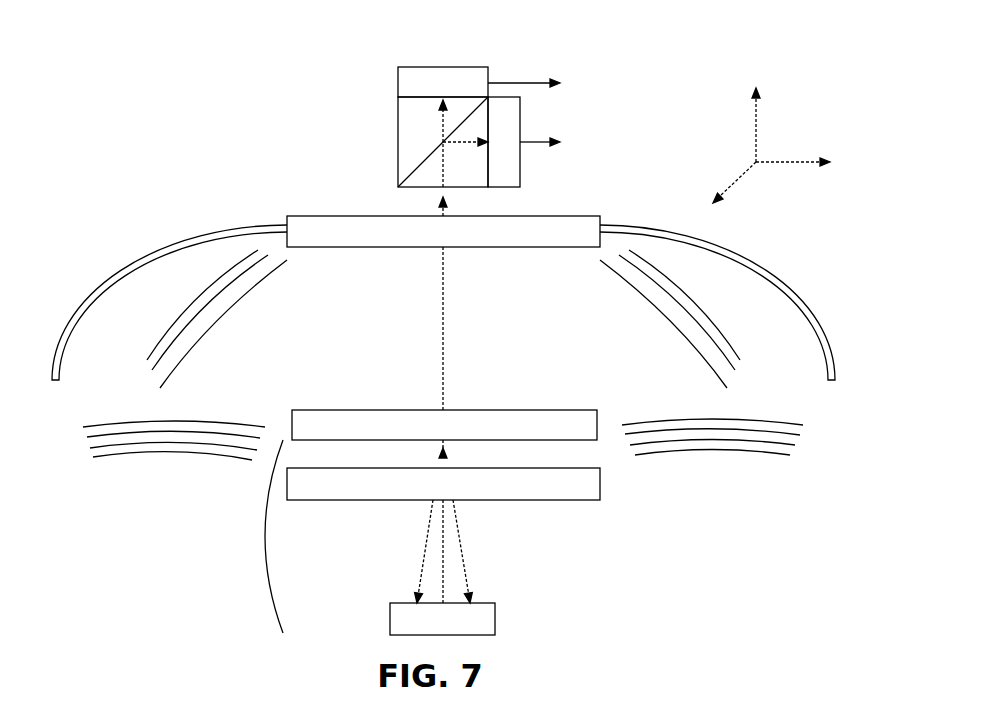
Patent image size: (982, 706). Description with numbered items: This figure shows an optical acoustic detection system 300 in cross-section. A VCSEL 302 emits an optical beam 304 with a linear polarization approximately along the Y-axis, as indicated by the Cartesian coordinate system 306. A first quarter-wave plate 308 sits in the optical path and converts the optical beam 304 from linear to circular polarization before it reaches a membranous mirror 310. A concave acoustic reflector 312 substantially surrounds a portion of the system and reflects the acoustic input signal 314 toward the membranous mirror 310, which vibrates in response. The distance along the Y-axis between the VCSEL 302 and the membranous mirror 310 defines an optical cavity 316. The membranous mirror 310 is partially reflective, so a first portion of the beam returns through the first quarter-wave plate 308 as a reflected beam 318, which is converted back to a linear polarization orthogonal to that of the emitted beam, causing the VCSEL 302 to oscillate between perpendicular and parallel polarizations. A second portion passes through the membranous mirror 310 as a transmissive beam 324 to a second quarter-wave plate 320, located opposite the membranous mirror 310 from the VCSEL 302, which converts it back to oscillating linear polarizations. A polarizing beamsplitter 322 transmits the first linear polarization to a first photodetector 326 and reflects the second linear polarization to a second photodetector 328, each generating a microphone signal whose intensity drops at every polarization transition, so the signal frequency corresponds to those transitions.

The optical acoustic detection system 300 is at (123, 84).
The VCSEL 302 is at (495, 617).
The optical beam 304 is at (447, 535).
The Cartesian coordinate system 306 is at (797, 103).
The first quarter-wave plate 308 is at (367, 500).
The membranous mirror 310 is at (352, 410).
The acoustic reflector 312 is at (155, 252).
The acoustic input signal 314 is at (258, 336).
The optical cavity 316 is at (262, 536).
The reflected beam 318 is at (418, 565).
The second quarter-wave plate 320 is at (325, 216).
The polarizing beamsplitter 322 is at (398, 148).
The transmissive beam 324 is at (443, 333).
The first photodetector 326 is at (398, 86).
The second photodetector 328 is at (520, 160).